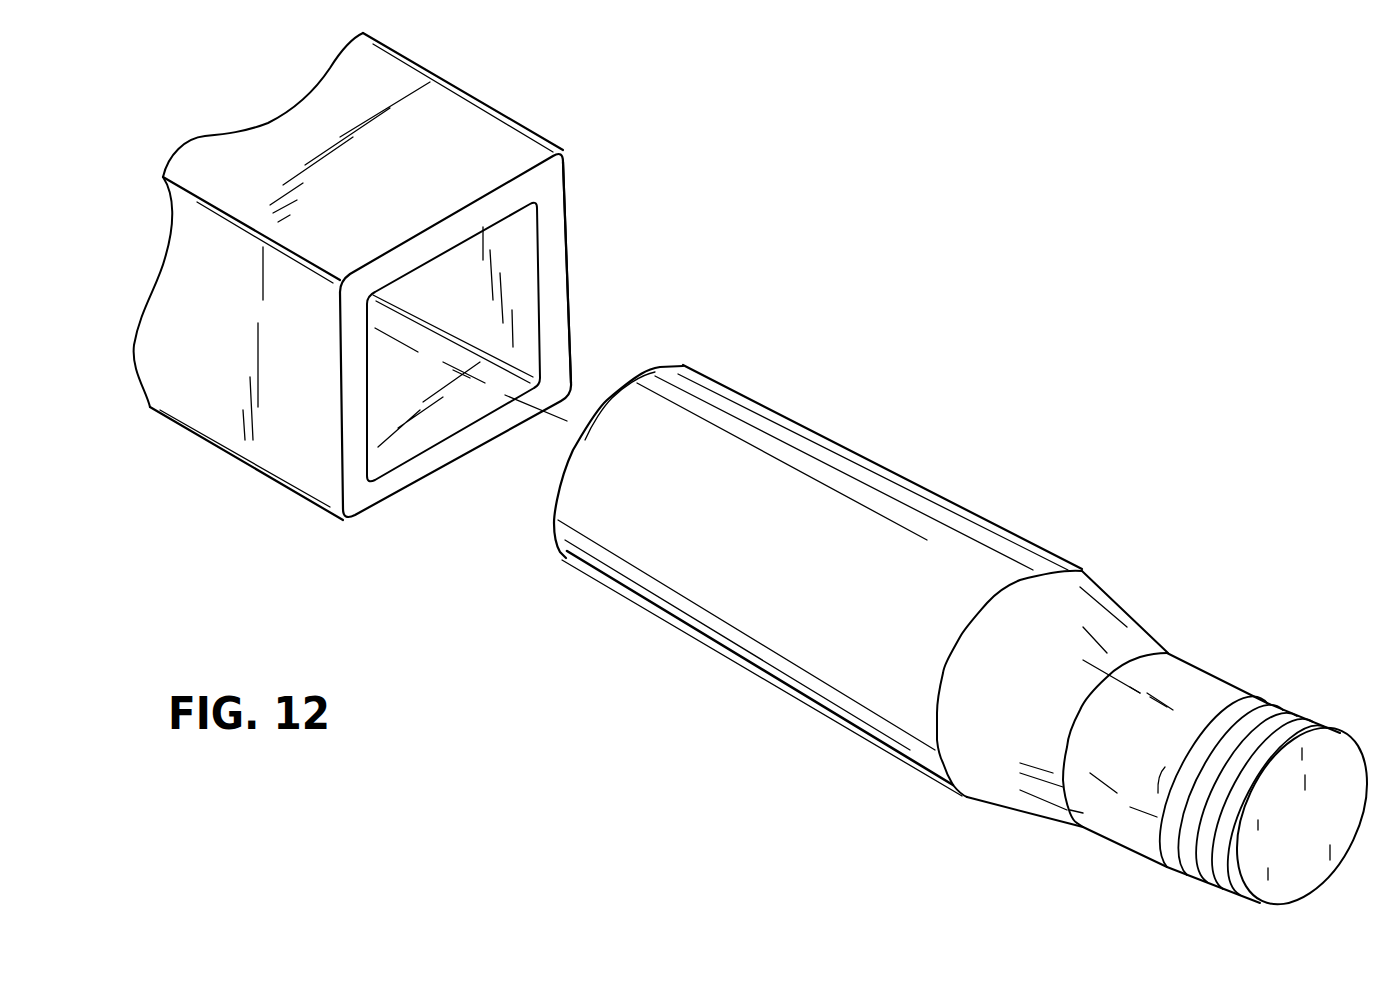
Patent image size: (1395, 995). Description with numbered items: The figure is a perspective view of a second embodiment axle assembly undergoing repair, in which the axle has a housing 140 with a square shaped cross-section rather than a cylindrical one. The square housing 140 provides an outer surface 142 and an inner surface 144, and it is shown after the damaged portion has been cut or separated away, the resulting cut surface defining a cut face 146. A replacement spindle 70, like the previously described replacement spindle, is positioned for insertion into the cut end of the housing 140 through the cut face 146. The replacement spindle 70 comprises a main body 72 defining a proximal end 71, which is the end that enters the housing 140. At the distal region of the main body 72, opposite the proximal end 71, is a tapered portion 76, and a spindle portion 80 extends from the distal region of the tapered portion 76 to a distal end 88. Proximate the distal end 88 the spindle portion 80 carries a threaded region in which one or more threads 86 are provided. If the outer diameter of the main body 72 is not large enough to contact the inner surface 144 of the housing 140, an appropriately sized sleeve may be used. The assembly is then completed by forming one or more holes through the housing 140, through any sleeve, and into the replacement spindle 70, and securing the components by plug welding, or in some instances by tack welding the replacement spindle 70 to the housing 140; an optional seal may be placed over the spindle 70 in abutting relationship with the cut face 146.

The housing 140 is at (385, 293).
The outer surface 142 is at (513, 137).
The cut face 146 is at (563, 237).
The inner surface 144 is at (397, 453).
The proximal end 71 is at (560, 467).
The replacement spindle 70 is at (770, 580).
The main body 72 is at (1014, 540).
The tapered portion 76 is at (1133, 630).
The spindle portion 80 is at (1207, 678).
The threads 86 is at (1283, 718).
The distal end 88 is at (1337, 777).